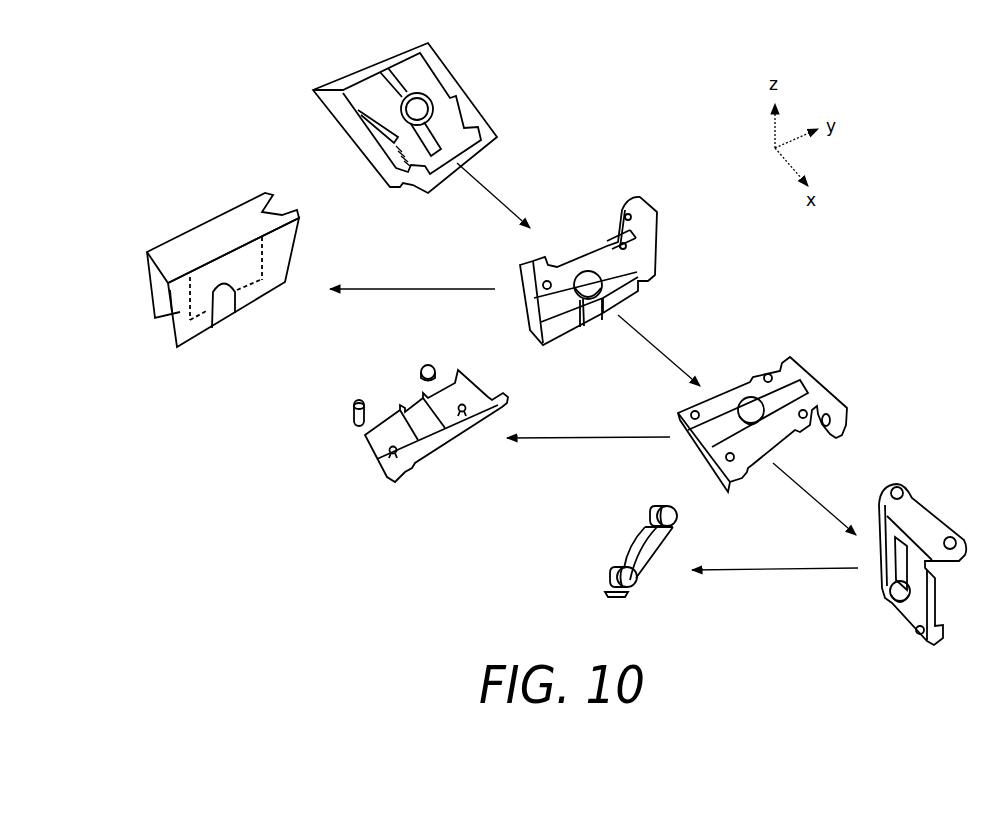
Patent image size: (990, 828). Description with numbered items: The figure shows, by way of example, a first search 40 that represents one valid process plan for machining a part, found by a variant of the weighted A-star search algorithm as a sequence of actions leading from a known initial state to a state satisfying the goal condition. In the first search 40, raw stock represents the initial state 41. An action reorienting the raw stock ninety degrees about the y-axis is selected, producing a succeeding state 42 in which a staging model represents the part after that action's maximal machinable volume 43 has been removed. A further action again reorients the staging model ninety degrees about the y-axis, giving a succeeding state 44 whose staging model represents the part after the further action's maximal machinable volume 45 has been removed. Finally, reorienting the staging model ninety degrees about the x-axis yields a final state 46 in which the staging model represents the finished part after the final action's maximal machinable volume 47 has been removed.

The first search 40 is at (191, 92).
The initial state 41 is at (497, 118).
The succeeding state 42 is at (657, 238).
The maximal machinable volume 43 is at (147, 252).
The succeeding state 44 is at (847, 412).
The maximal machinable volume 45 is at (363, 437).
The final state 46 is at (932, 603).
The maximal machinable volume 47 is at (618, 543).